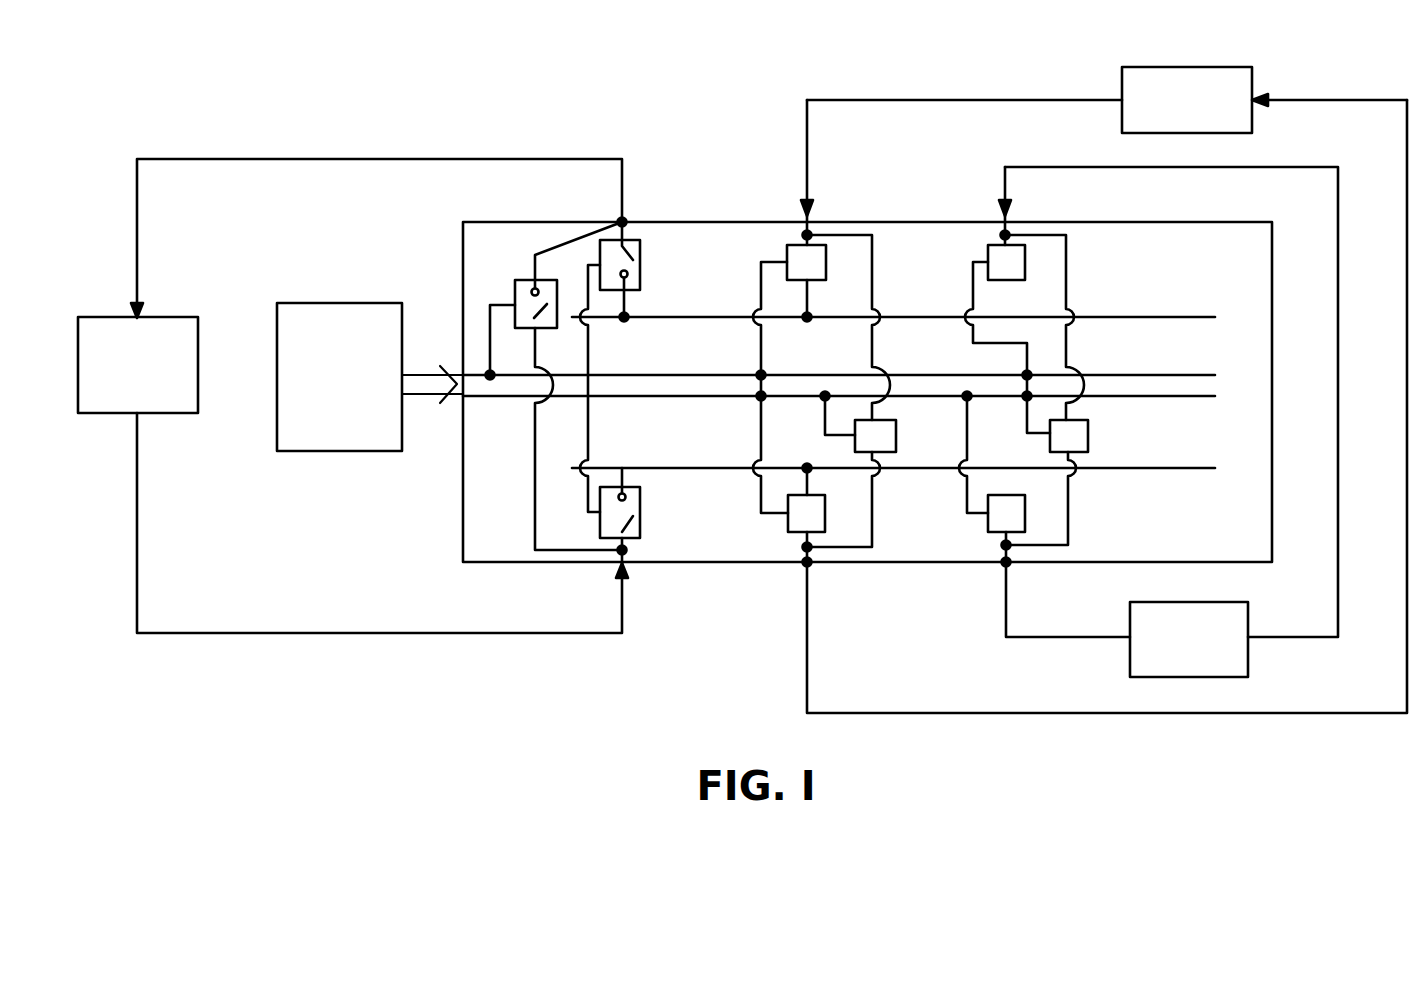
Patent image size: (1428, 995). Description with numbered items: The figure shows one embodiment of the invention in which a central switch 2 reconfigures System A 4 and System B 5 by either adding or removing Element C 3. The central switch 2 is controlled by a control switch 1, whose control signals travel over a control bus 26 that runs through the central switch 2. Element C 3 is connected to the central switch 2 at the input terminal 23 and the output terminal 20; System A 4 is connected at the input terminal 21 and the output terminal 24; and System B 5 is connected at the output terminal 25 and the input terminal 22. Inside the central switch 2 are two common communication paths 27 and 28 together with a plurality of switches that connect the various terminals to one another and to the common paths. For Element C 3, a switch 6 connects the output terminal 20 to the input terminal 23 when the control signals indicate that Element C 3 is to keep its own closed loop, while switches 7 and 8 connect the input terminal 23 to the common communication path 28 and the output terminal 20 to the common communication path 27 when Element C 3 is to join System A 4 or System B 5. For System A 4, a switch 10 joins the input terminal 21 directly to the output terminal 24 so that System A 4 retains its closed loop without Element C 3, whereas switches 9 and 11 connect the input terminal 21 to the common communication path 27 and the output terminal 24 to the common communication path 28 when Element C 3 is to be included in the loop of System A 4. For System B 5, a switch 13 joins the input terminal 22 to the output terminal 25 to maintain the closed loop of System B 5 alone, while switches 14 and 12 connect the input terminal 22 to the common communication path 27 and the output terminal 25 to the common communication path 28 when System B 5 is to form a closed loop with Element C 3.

The control switch 1 is at (310, 451).
The central switch 2 is at (1272, 562).
The Element C 3 is at (183, 413).
The System A 4 is at (1250, 67).
The System B 5 is at (1248, 670).
The switch 6 is at (515, 296).
The switch 7 is at (640, 255).
The switch 8 is at (640, 508).
The switch 9 is at (826, 262).
The switch 10 is at (896, 436).
The switch 11 is at (825, 512).
The switch 12 is at (1025, 505).
The switch 13 is at (1089, 436).
The switch 14 is at (1025, 278).
The output terminal 20 is at (626, 219).
The input terminal 21 is at (811, 215).
The input terminal 22 is at (1009, 215).
The input terminal 23 is at (626, 568).
The output terminal 24 is at (810, 566).
The output terminal 25 is at (1009, 566).
The control bus 26 is at (1190, 396).
The common communication path 27 is at (1173, 317).
The common communication path 28 is at (1192, 468).